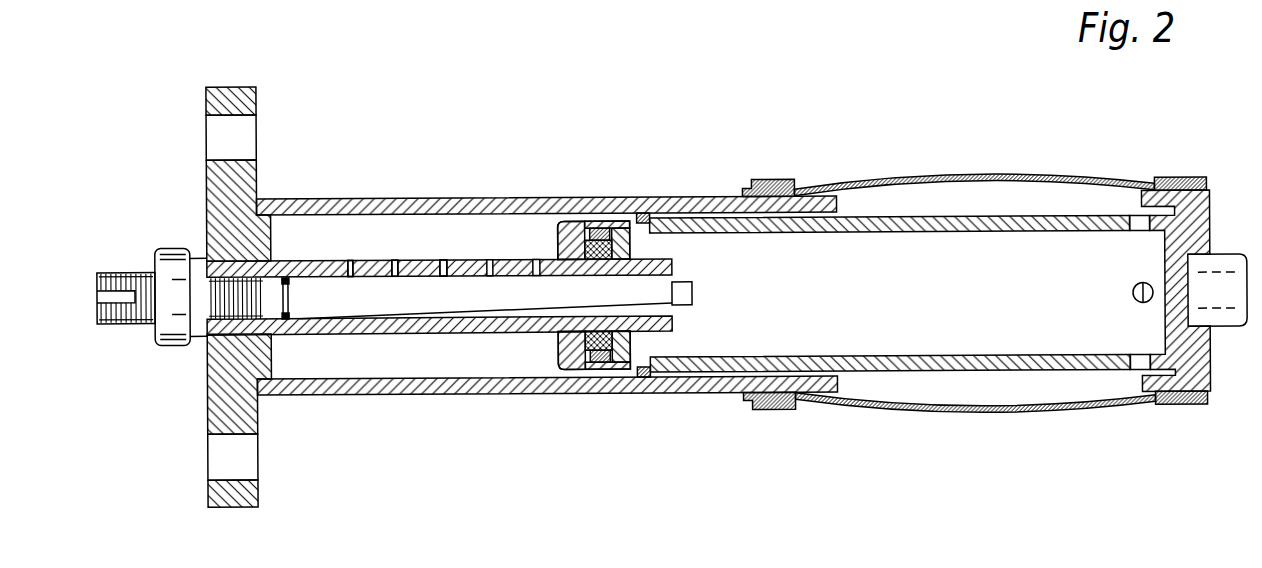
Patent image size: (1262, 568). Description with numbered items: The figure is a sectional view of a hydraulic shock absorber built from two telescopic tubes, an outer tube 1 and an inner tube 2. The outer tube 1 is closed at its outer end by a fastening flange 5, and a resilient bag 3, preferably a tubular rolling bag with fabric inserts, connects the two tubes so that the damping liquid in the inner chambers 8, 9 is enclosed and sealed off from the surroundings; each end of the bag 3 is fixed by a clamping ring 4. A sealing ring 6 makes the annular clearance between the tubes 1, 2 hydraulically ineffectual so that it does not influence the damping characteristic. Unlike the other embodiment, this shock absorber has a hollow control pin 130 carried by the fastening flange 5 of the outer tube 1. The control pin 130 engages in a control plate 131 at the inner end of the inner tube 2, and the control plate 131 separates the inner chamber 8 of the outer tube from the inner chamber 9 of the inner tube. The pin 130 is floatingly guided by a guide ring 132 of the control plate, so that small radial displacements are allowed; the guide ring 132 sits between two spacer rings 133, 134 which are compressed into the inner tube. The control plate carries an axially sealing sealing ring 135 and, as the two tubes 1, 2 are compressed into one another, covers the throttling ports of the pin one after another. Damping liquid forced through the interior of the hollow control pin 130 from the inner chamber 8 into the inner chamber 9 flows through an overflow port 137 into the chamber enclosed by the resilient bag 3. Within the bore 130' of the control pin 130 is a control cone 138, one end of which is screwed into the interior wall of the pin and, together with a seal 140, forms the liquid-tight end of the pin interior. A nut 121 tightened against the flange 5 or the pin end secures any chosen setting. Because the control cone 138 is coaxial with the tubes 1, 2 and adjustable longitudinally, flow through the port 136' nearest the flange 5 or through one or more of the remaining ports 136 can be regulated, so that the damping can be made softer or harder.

The outer tube 1 is at (340, 195).
The inner tube 2 is at (700, 222).
The resilient bag 3 is at (925, 179).
The clamping ring 4 is at (780, 188).
The fastening flange 5 is at (232, 91).
The sealing ring 6 is at (643, 214).
The inner chamber 8 is at (514, 251).
The inner chamber 9 is at (1040, 289).
The nut 121 is at (165, 247).
The control pin 130 is at (440, 324).
The bore 130' is at (715, 278).
The control plate 131 is at (650, 345).
The guide ring 132 is at (598, 238).
The spacer ring 133 is at (573, 340).
The spacer ring 134 is at (622, 363).
The sealing ring 135 is at (604, 230).
The throttling ports 136 is at (421, 247).
The throttling port 136' is at (366, 247).
The overflow port 137 is at (1137, 223).
The control cone 138 is at (363, 304).
The seal 140 is at (290, 318).